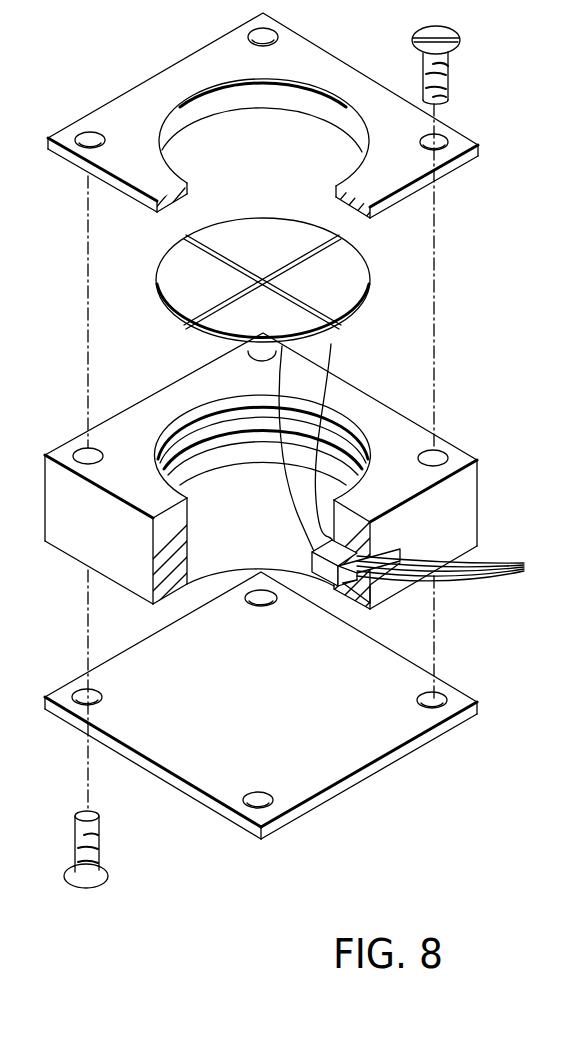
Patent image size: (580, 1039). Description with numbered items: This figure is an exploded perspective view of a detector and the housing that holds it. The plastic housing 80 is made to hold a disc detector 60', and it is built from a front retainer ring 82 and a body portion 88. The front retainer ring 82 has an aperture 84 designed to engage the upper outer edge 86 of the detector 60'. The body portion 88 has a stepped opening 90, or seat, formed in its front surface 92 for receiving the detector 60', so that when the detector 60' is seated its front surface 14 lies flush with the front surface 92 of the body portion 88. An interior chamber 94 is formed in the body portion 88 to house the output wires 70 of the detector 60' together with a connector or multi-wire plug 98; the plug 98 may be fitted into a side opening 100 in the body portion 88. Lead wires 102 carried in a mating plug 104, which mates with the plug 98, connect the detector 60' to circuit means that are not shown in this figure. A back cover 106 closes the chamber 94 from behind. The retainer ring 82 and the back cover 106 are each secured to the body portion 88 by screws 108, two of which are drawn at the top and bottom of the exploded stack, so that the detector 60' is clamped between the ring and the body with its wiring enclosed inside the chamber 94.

The plastic housing 80 is at (98, 104).
The front retainer ring 82 is at (302, 52).
The aperture 84 is at (188, 100).
The upper outer edge 86 is at (253, 222).
The screws 108 is at (450, 65).
The front surface 14 is at (178, 270).
The disc detector 60' is at (340, 432).
The stepped opening 90 is at (183, 422).
The front surface 92 is at (363, 407).
The body portion 88 is at (482, 482).
The output wires 70 is at (313, 452).
The interior chamber 94 is at (217, 467).
The multi-wire plug 98 is at (318, 566).
The side opening 100 is at (342, 568).
The plug 104 is at (390, 547).
The lead wires 102 is at (495, 562).
The back cover 106 is at (348, 765).